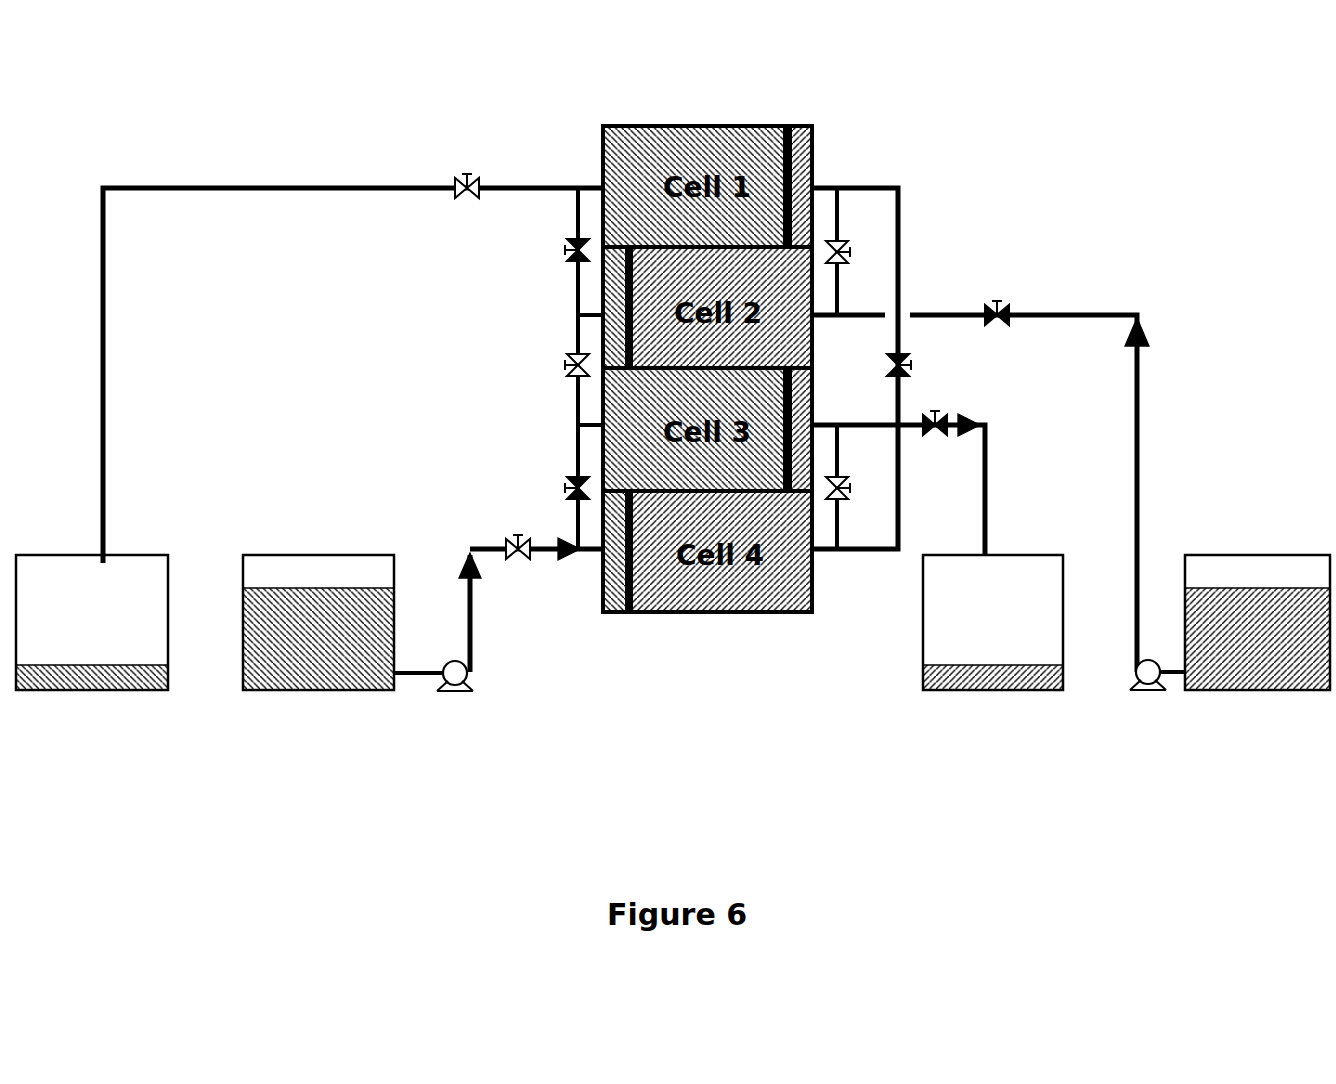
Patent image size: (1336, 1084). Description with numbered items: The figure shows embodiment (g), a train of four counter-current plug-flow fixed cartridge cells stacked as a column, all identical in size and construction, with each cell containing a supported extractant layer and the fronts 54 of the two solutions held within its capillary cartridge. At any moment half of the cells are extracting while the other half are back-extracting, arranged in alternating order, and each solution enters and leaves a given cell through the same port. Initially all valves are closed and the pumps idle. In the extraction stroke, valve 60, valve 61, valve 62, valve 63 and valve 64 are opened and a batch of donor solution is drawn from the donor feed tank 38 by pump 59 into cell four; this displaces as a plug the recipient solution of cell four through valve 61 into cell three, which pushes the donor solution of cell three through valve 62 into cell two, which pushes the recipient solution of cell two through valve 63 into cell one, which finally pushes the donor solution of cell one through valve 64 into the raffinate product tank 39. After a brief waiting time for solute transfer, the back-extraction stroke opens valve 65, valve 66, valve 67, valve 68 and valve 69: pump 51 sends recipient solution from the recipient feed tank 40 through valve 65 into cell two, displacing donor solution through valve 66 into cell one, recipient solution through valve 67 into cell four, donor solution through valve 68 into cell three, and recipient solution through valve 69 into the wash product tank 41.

The front of the solution 54 is at (783, 125).
The valve 64 is at (465, 165).
The valve 66 is at (555, 241).
The valve 62 is at (555, 360).
The valve 68 is at (555, 488).
The valve 63 is at (857, 247).
The valve 67 is at (881, 370).
The valve 61 is at (857, 494).
The valve 65 is at (990, 288).
The valve 69 is at (932, 441).
The valve 60 is at (517, 567).
The pump 59 is at (452, 701).
The pump 51 is at (1147, 701).
The donor feed tank 38 is at (318, 622).
The raffinate product tank 39 is at (92, 622).
The recipient feed tank 40 is at (1257, 622).
The wash product tank 41 is at (993, 622).